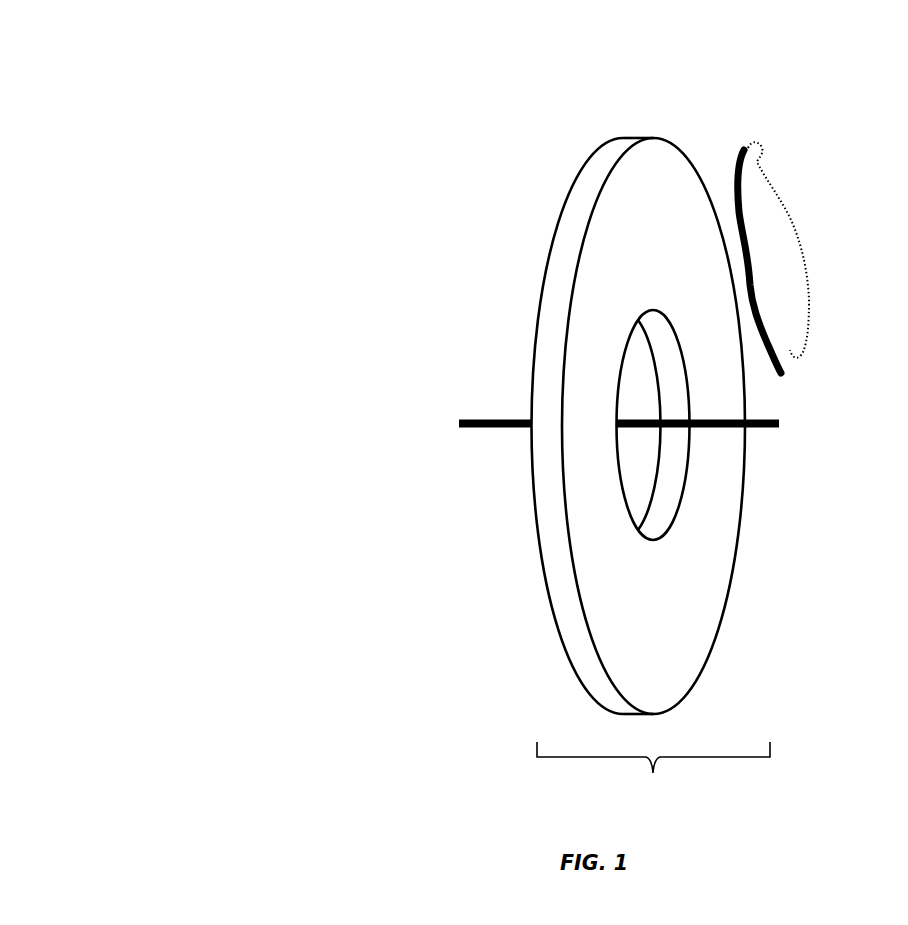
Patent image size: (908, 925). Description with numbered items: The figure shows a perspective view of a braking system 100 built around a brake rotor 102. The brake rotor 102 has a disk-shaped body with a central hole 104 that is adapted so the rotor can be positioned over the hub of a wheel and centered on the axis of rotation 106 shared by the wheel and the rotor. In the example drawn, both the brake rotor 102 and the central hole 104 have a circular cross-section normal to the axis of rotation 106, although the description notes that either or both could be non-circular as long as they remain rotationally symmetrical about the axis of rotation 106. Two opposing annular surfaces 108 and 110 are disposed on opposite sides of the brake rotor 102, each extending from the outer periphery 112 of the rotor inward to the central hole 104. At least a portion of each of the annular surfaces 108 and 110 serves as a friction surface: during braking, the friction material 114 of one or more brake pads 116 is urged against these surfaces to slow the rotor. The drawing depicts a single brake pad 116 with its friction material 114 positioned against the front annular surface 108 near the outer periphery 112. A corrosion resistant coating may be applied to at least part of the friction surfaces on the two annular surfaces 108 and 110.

The braking system 100 is at (138, 112).
The brake rotor 102 is at (653, 777).
The central hole 104 is at (640, 461).
The axis of rotation 106 is at (764, 432).
The annular surface 108 is at (670, 669).
The annular surface 110 is at (568, 661).
The outer periphery 112 is at (588, 180).
The friction material 114 is at (734, 166).
The brake pad 116 is at (776, 248).